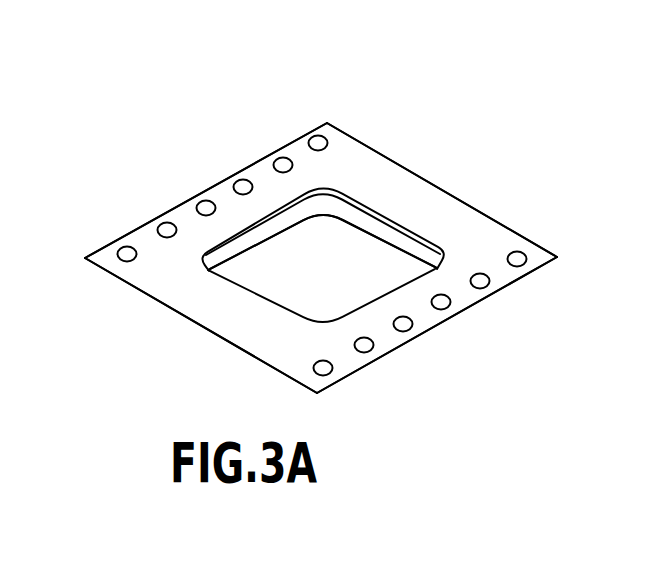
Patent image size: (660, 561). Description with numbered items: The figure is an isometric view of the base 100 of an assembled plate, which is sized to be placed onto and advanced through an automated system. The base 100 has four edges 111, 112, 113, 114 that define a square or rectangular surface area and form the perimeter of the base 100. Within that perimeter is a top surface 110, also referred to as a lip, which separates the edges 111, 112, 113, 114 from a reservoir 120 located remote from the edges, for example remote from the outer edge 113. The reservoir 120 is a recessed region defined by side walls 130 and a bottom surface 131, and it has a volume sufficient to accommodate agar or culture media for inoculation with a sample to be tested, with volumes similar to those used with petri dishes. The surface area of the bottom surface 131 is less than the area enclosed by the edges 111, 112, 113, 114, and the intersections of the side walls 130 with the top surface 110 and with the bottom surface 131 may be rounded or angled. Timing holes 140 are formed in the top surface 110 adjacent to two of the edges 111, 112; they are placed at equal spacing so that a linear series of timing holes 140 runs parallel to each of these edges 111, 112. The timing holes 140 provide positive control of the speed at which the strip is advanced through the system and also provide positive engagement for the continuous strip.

The base 100 is at (316, 229).
The top surface 110 is at (395, 195).
The edge 111 is at (223, 182).
The edge 112 is at (388, 352).
The edge 113 is at (158, 302).
The edge 114 is at (455, 198).
The reservoir 120 is at (313, 270).
The side wall 130 is at (326, 199).
The bottom surface 131 is at (340, 230).
The timing holes 140 is at (486, 287).